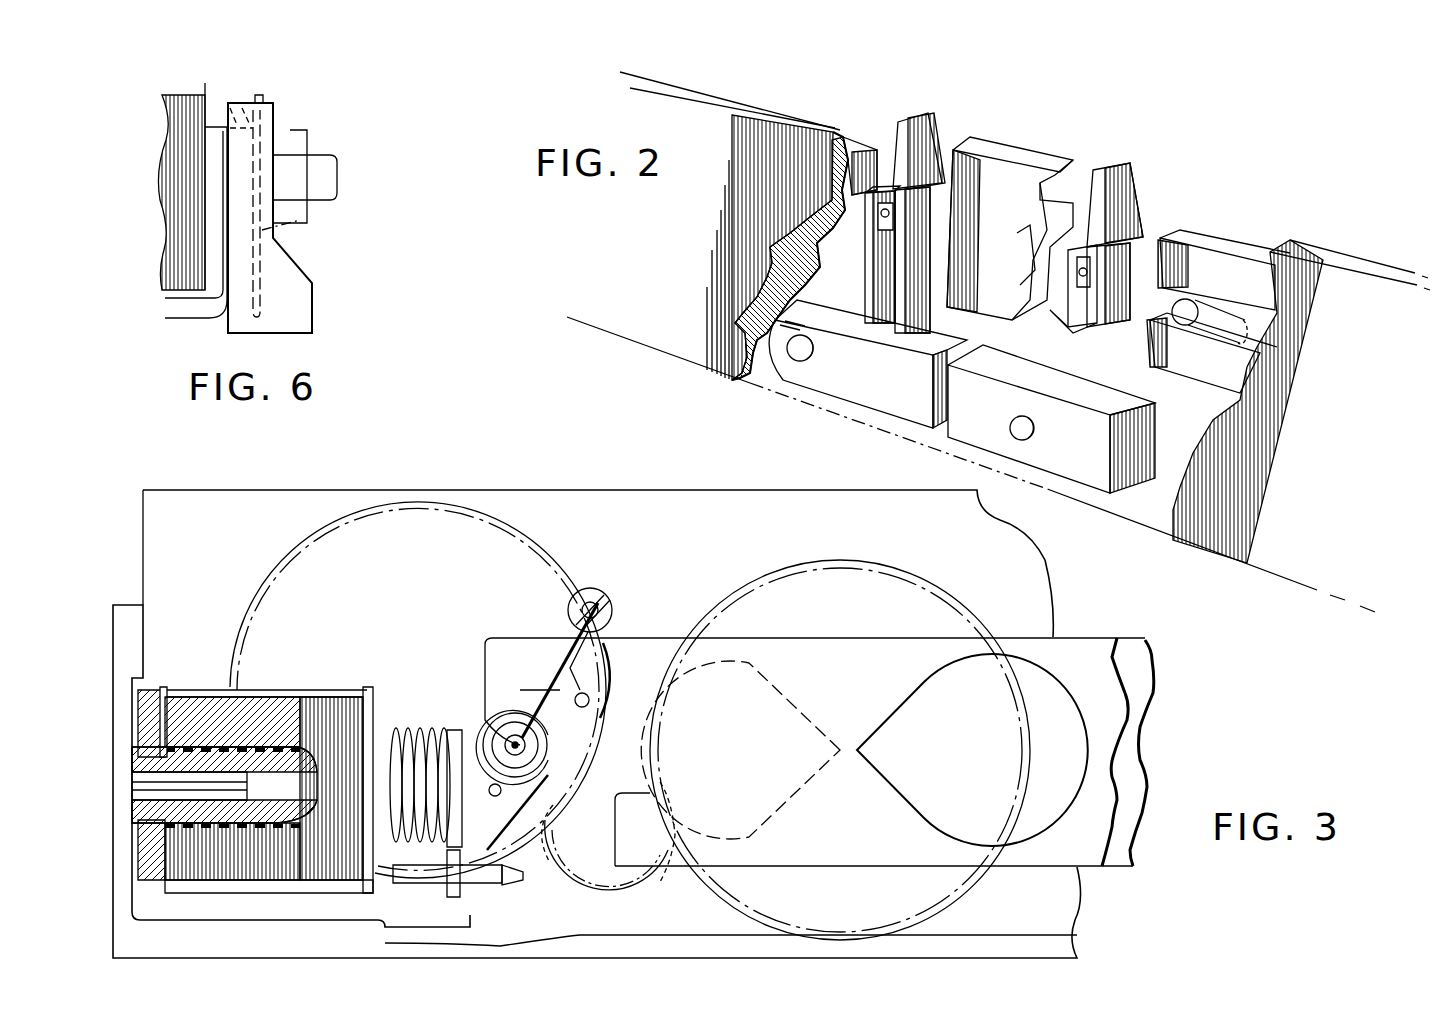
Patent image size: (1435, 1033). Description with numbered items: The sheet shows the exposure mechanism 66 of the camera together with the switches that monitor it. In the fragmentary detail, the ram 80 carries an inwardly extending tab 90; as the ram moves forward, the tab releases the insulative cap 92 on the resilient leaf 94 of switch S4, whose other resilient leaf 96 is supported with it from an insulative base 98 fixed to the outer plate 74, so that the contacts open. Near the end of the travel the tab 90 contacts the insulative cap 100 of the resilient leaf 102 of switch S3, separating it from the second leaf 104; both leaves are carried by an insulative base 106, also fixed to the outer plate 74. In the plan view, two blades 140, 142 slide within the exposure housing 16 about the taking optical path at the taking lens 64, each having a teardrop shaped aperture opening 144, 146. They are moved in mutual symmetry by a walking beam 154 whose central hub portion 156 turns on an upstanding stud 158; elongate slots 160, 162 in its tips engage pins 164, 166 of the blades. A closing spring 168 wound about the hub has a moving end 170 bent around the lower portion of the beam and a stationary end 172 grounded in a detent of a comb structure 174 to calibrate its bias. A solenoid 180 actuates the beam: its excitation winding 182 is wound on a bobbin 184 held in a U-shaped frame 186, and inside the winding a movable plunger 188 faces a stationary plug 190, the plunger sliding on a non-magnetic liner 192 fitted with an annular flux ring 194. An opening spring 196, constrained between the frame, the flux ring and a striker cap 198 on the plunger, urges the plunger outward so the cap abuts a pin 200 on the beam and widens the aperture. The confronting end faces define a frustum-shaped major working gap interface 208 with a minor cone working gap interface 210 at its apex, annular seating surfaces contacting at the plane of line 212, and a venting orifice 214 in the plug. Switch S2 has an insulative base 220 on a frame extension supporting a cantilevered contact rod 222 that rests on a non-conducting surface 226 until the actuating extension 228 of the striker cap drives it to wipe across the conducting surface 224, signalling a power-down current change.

In FIG. 3, the exposure housing 16 is at (308, 512).
In FIG. 3, the taking lens 64 is at (876, 568).
In FIG. 3, the exposure mechanism 66 is at (512, 476).
In FIG. 2, the outer plate 74 is at (770, 113).
In FIG. 2, the ram 80 is at (1017, 233).
In FIG. 2, the tab 90 is at (983, 150).
In FIG. 2, the insulative cap 92 is at (933, 130).
In FIG. 2, the resilient leaf 94 is at (913, 290).
In FIG. 2, the resilient leaf 96 is at (880, 267).
In FIG. 2, the insulative base 98 is at (827, 363).
In FIG. 2, the insulative cap 100 is at (1117, 197).
In FIG. 2, the resilient leaf 102 is at (1113, 272).
In FIG. 2, the second leaf 104 is at (1060, 342).
In FIG. 2, the insulative base 106 is at (993, 423).
In FIG. 3, the blade 140 is at (1068, 655).
In FIG. 3, the blade 142 is at (1125, 650).
In FIG. 3, the teardrop shaped aperture opening 144 is at (895, 715).
In FIG. 3, the teardrop shaped aperture opening 146 is at (775, 689).
In FIG. 3, the walking beam 154 is at (590, 668).
In FIG. 3, the hub portion 156 is at (596, 705).
In FIG. 3, the stud 158 is at (522, 700).
In FIG. 3, the elongate slot 160 is at (606, 612).
In FIG. 3, the elongate slot 162 is at (473, 897).
In FIG. 3, the pin 164 is at (605, 603).
In FIG. 3, the pin 166 is at (400, 927).
In FIG. 3, the closing spring 168 is at (497, 648).
In FIG. 3, the sprocket 170 is at (557, 845).
In FIG. 3, the stationary end 172 is at (545, 690).
In FIG. 3, the comb structure 174 is at (550, 745).
In FIG. 3, the solenoid 180 is at (316, 676).
In FIG. 3, the excitation winding 182 is at (255, 703).
In FIG. 3, the bobbin 184 is at (162, 690).
In FIG. 3, the U-shaped frame 186 is at (183, 908).
In FIG. 3, the plunger 188 is at (270, 775).
In FIG. 3, the plug 190 is at (147, 768).
In FIG. 3, the non-magnetic liner 192 is at (220, 747).
In FIG. 3, the annular flux ring 194 is at (398, 727).
In FIG. 3, the opening spring 196 is at (343, 697).
In FIG. 3, the striker cap 198 is at (462, 740).
In FIG. 3, the pin 200 is at (520, 800).
In FIG. 3, the major working gap interface 208 is at (247, 727).
In FIG. 3, the minor cone working gap interface 210 is at (132, 786).
In FIG. 3, the seating surfaces 212 is at (140, 803).
In FIG. 3, the orifice 214 is at (147, 777).
In FIG. 6, the insulative base 220 is at (300, 302).
In FIG. 6, the contact rod 222 is at (262, 230).
In FIG. 3, the contact rod 222 is at (420, 700).
In FIG. 6, the conducting surface 224 is at (235, 100).
In FIG. 3, the conducting surface 224 is at (405, 727).
In FIG. 6, the non-conducting surface 226 is at (268, 122).
In FIG. 3, the non-conducting surface 226 is at (428, 700).
In FIG. 6, the actuating extension 228 is at (283, 188).
In FIG. 3, the actuating extension 228 is at (313, 790).
In FIG. 6, the switch S2 is at (316, 263).
In FIG. 3, the switch S2 is at (478, 916).
In FIG. 2, the switch S3 is at (1067, 484).
In FIG. 2, the switch S4 is at (877, 413).